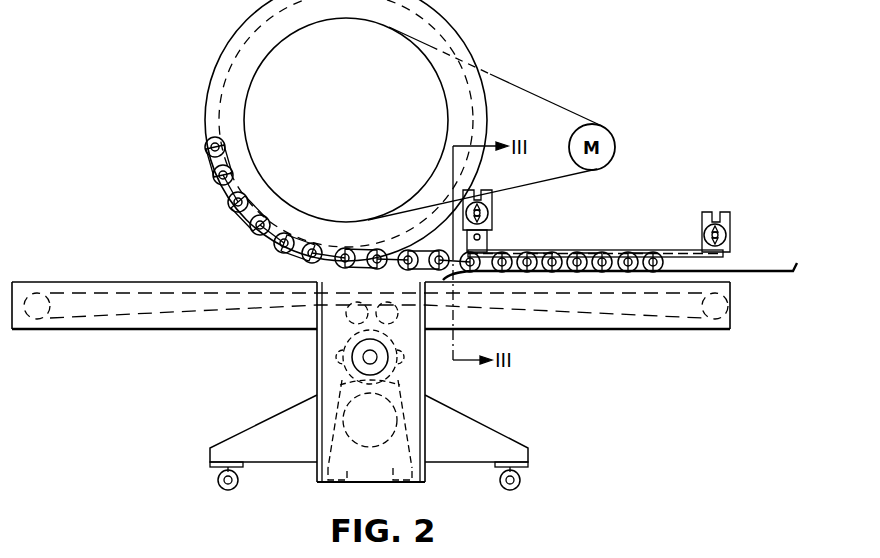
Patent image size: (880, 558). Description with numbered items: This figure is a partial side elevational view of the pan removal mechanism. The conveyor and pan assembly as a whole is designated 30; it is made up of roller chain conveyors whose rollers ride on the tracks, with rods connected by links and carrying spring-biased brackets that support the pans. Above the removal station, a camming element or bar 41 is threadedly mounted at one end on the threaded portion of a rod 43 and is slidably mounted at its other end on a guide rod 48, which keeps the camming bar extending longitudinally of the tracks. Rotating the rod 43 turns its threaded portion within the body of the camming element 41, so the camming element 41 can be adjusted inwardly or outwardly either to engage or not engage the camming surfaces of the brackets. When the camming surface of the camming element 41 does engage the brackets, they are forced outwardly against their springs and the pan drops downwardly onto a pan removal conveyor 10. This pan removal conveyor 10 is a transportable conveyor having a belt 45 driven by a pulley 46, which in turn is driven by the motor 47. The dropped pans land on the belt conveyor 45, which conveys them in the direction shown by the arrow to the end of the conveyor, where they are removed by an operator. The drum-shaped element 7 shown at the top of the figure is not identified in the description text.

The rotary drum 7 is at (407, 63).
The pan removal conveyor 10 is at (452, 377).
The conveyor and pan assembly 30 is at (232, 229).
The camming element 41 is at (632, 252).
The rod 43 is at (482, 235).
The belt 45 is at (615, 316).
The pulley 46 is at (346, 380).
The motor 47 is at (362, 418).
The guide rod 48 is at (718, 233).